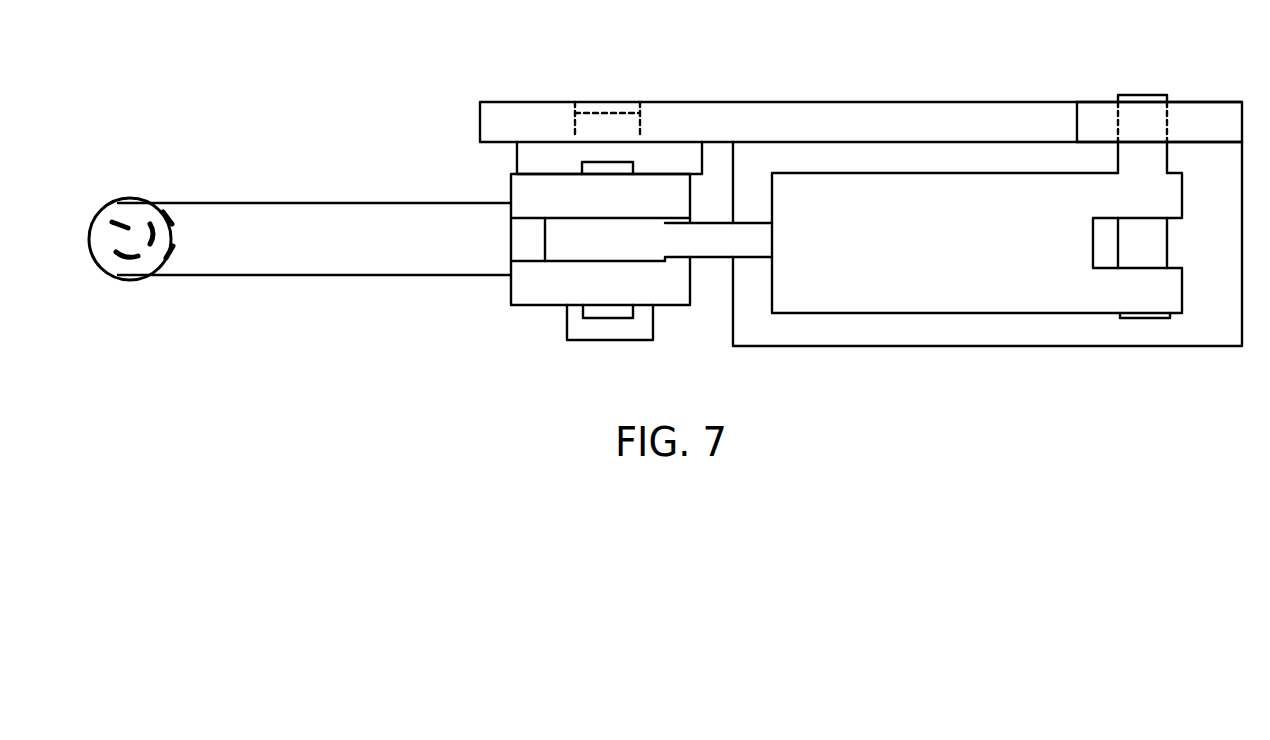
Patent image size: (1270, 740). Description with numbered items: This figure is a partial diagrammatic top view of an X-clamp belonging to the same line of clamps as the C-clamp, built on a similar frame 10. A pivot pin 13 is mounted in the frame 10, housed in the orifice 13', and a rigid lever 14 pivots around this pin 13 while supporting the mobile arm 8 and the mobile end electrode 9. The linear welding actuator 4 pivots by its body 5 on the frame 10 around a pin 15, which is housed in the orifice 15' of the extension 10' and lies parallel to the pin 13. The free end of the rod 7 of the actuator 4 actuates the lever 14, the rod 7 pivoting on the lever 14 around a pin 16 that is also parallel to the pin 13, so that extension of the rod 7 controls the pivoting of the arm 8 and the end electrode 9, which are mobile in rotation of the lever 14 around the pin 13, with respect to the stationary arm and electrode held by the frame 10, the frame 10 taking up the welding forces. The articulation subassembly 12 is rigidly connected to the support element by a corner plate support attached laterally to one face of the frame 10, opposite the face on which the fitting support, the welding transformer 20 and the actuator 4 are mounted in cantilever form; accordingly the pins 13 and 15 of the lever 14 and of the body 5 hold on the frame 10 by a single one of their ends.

The welding actuator 4 is at (840, 317).
The body 5 is at (1050, 283).
The rod 7 is at (713, 245).
The mobile arm 8 is at (435, 272).
The mobile end electrode 9 is at (120, 225).
The frame 10 is at (861, 91).
The extension 10' is at (1159, 93).
The articulation subassembly 12 is at (465, 183).
The pivot pin 13 is at (580, 356).
The orifice 13' is at (599, 80).
The rigid lever 14 is at (510, 308).
The pin 15 is at (1110, 108).
The orifice 15' is at (1139, 82).
The pin 16 is at (618, 322).
The welding transformer 20 is at (1210, 315).